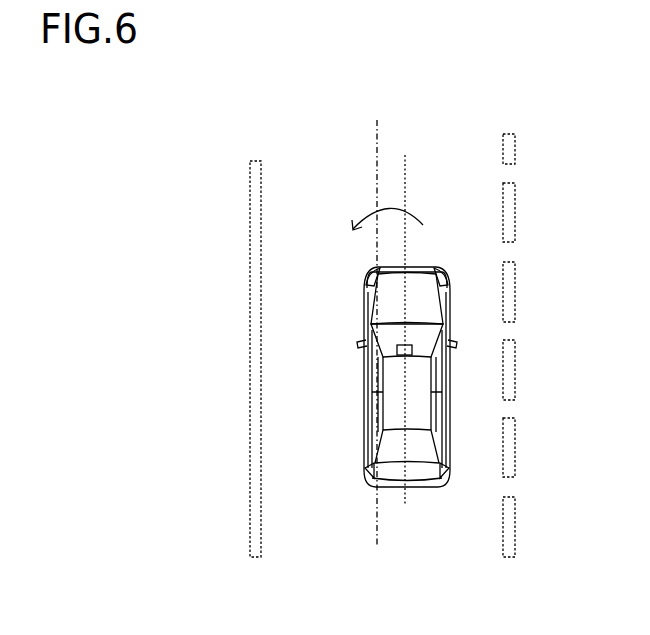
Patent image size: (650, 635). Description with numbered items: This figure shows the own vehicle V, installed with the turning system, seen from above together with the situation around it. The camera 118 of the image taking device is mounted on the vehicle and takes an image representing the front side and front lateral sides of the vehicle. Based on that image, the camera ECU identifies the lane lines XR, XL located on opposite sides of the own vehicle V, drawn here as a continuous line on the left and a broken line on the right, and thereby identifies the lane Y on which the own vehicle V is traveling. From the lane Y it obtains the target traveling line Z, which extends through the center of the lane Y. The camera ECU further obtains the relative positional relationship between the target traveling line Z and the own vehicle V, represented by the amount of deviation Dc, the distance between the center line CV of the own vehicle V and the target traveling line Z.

The camera 118 is at (405, 356).
The lane line XL is at (254, 245).
The lane line XR is at (515, 226).
The center line of the own vehicle CV is at (406, 246).
The target traveling line Z is at (377, 321).
The lane Y is at (317, 181).
The own vehicle V is at (347, 383).
The deviation Dc is at (424, 180).